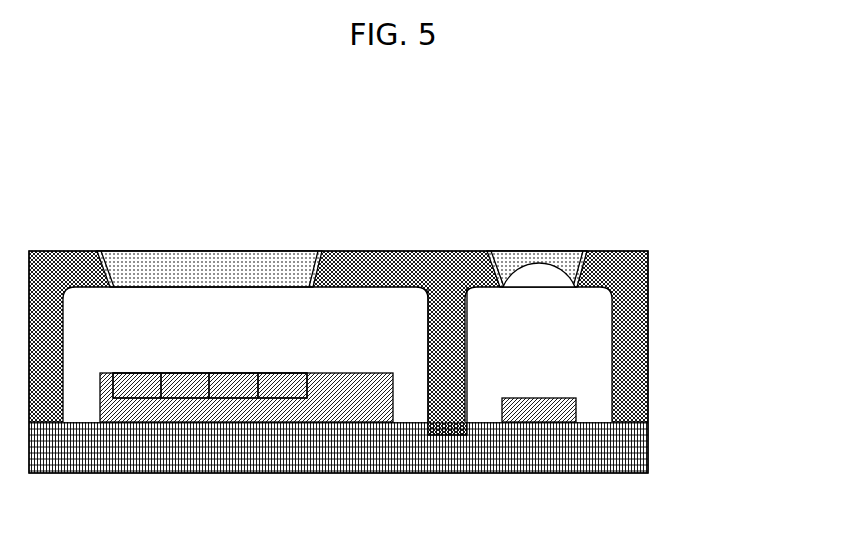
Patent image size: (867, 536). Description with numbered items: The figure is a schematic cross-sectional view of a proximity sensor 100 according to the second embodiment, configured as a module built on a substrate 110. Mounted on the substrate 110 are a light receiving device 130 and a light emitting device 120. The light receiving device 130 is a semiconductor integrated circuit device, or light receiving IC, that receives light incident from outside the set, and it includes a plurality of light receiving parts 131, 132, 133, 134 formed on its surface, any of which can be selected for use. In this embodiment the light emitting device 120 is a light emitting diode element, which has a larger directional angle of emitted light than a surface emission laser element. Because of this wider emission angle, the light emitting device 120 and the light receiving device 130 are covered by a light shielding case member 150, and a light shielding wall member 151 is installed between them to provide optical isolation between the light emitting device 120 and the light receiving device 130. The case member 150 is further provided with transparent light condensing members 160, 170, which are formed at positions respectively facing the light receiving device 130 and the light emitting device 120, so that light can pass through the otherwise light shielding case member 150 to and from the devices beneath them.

The proximity sensor 100 is at (722, 137).
The substrate 110 is at (355, 474).
The light emitting device 120 is at (536, 396).
The light receiving device 130 is at (358, 372).
The light receiving part 131 is at (287, 372).
The light receiving part 132 is at (237, 372).
The light receiving part 133 is at (190, 372).
The light receiving part 134 is at (141, 372).
The light shielding case member 150 is at (404, 250).
The light shielding wall member 151 is at (469, 336).
The transparent light condensing member 160 is at (213, 250).
The transparent light condensing member 170 is at (540, 250).